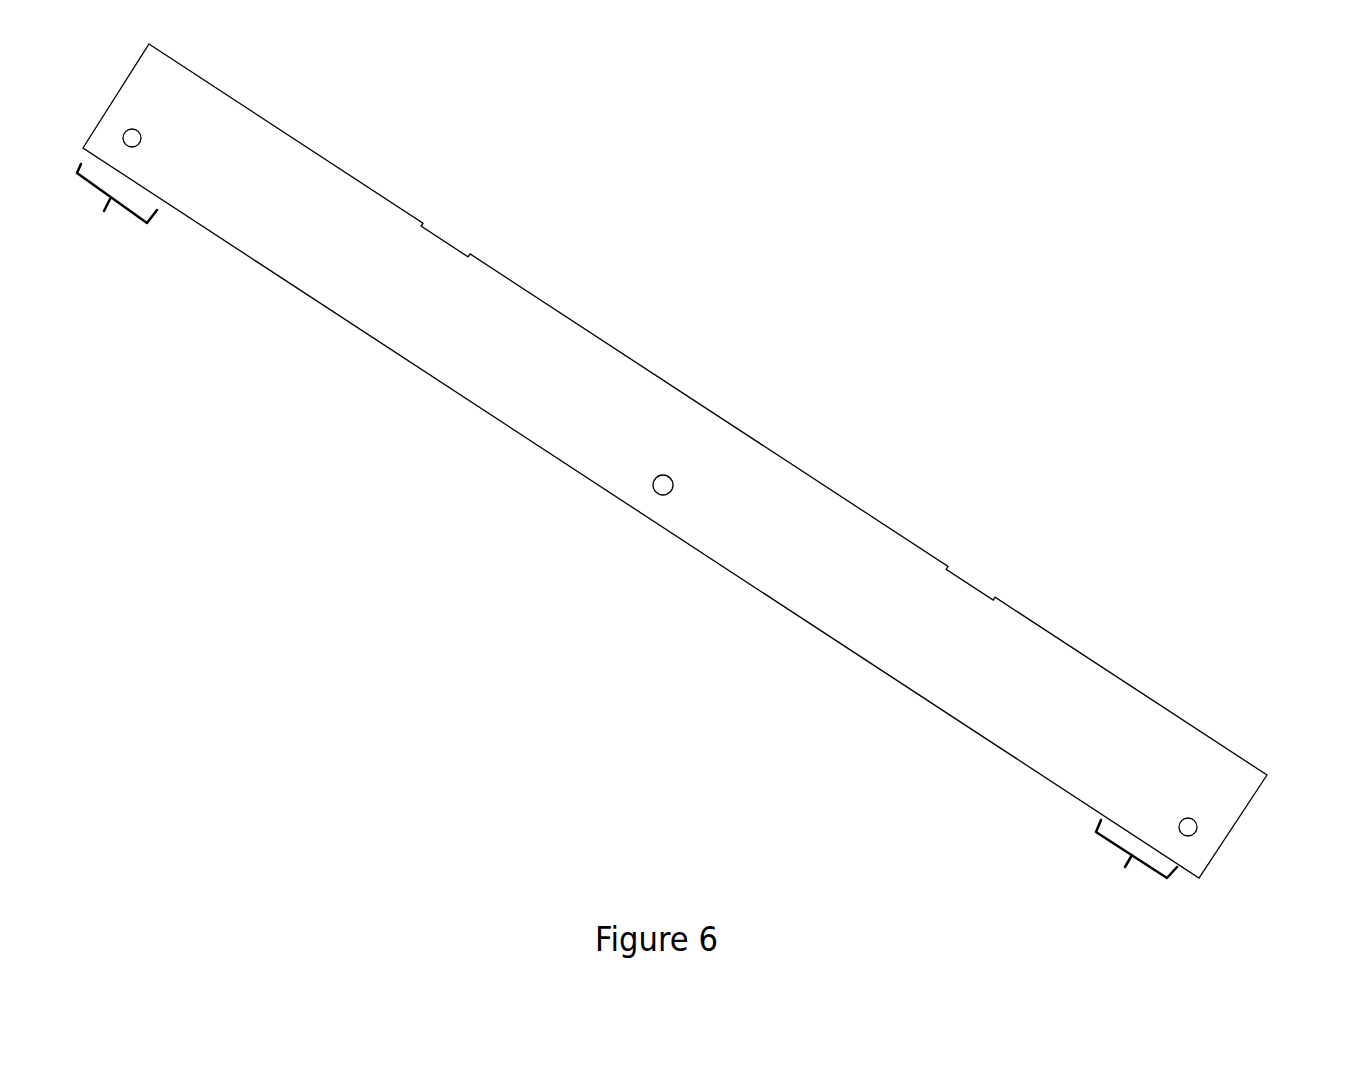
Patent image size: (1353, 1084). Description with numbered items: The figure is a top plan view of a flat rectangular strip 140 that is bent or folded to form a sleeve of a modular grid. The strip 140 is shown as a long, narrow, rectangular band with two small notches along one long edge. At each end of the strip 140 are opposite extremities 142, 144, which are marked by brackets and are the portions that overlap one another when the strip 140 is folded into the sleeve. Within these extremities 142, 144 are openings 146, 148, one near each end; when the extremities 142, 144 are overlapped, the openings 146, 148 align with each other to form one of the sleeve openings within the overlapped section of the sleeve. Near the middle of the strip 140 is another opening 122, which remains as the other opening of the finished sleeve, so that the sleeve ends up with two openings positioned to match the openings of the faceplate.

The rectangular strip 140 is at (560, 313).
The opening 122 is at (675, 483).
The opening 146 is at (142, 139).
The opening 148 is at (1192, 822).
The extremity 142 is at (117, 212).
The extremity 144 is at (1136, 867).